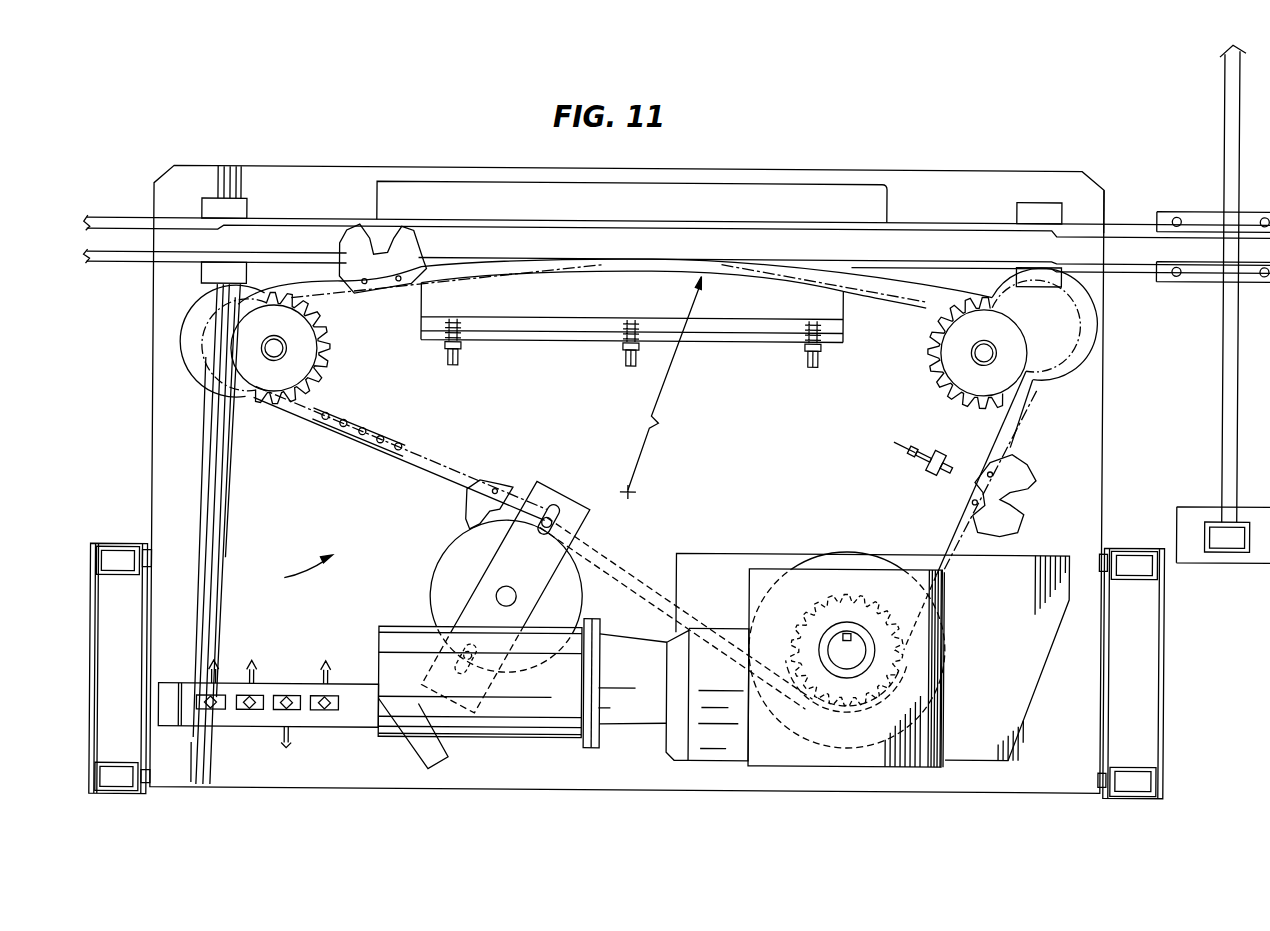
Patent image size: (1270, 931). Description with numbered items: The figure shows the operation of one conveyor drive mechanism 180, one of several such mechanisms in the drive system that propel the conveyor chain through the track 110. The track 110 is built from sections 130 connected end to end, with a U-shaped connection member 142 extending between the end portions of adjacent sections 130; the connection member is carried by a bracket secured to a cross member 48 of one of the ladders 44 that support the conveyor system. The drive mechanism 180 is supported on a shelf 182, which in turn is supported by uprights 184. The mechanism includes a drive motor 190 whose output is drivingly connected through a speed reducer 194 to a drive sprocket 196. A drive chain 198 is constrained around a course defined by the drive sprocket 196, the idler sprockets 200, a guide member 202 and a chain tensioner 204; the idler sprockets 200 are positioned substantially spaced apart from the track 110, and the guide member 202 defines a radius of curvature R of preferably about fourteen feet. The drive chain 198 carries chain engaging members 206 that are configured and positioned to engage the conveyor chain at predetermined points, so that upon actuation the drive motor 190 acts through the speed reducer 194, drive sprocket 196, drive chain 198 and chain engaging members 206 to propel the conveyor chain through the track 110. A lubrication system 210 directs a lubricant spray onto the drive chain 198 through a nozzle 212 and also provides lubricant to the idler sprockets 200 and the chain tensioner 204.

The ladder 44 is at (1203, 393).
The cross member 48 is at (1222, 432).
The track 110 is at (953, 221).
The track section 130 is at (1113, 219).
The U-shaped connection member 142 is at (1197, 207).
The conveyor drive mechanism 180 is at (291, 571).
The shelf 182 is at (313, 542).
The upright 184 is at (119, 548).
The drive motor 190 is at (475, 722).
The speed reducer 194 is at (697, 730).
The drive sprocket 196 is at (803, 597).
The drive chain 198 is at (356, 449).
The idler sprocket 200 is at (332, 358).
The guide member 202 is at (642, 303).
The chain tensioner 204 is at (442, 588).
The chain engaging member 206 is at (346, 238).
The lubrication system 210 is at (273, 686).
The nozzle 212 is at (951, 478).